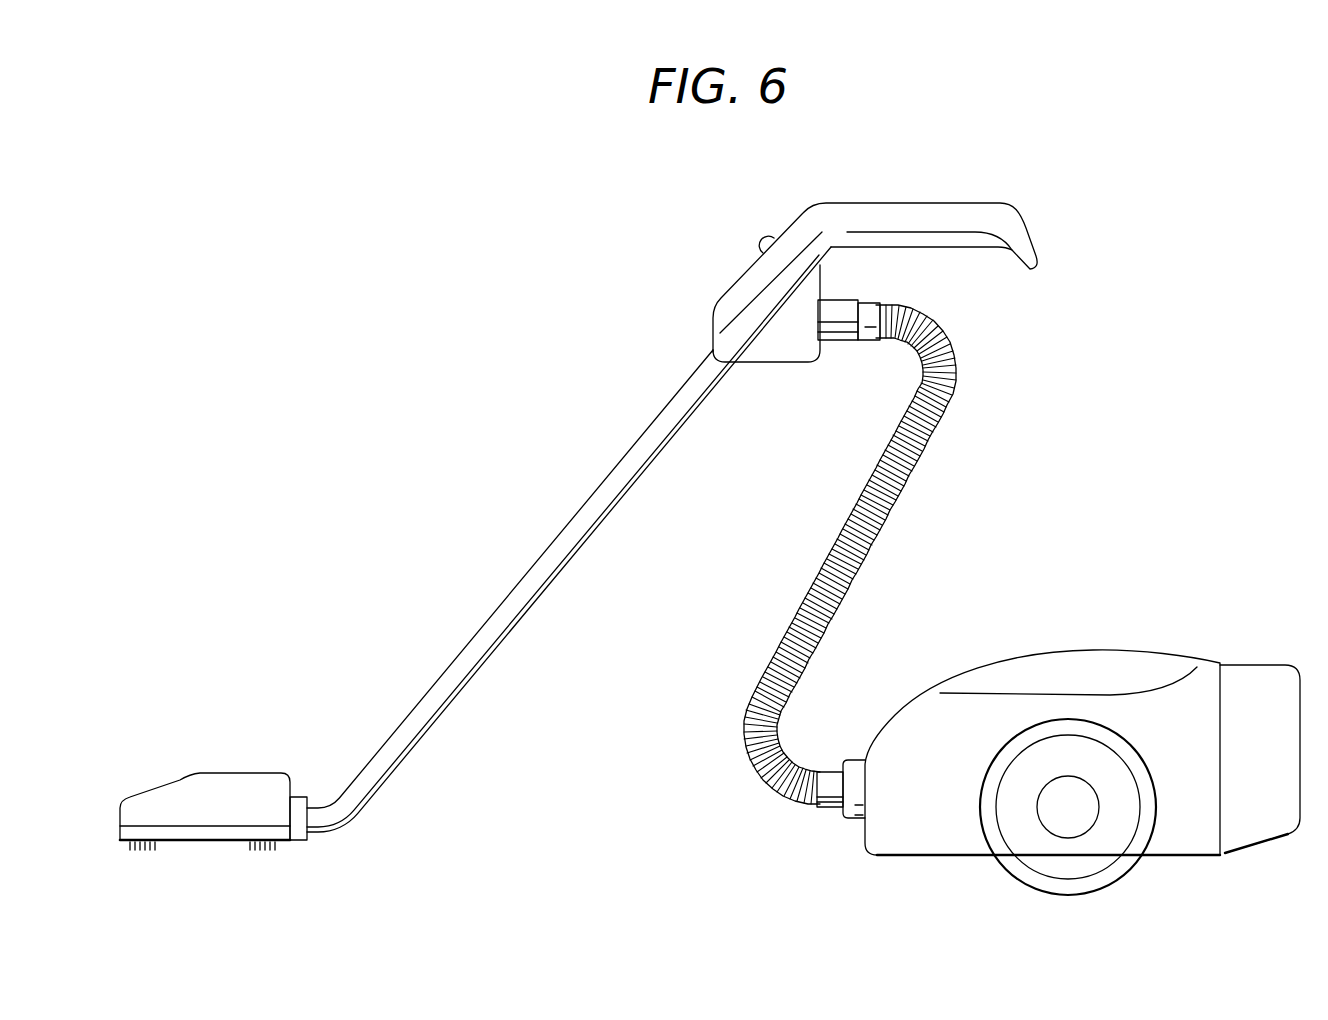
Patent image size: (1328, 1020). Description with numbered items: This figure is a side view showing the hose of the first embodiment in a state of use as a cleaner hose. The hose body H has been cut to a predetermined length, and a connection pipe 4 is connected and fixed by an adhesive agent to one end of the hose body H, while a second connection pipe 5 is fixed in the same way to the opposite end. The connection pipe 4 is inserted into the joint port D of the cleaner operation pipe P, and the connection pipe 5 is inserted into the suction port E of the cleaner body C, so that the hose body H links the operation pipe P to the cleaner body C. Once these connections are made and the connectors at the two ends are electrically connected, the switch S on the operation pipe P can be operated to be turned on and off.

The switch S is at (764, 243).
The cleaner operation pipe P is at (568, 522).
The joint port D is at (832, 318).
The connection pipe 4 is at (872, 320).
The hose body H is at (945, 487).
The cleaner body C is at (1156, 622).
The connection pipe 5 is at (830, 799).
The suction port E is at (857, 815).